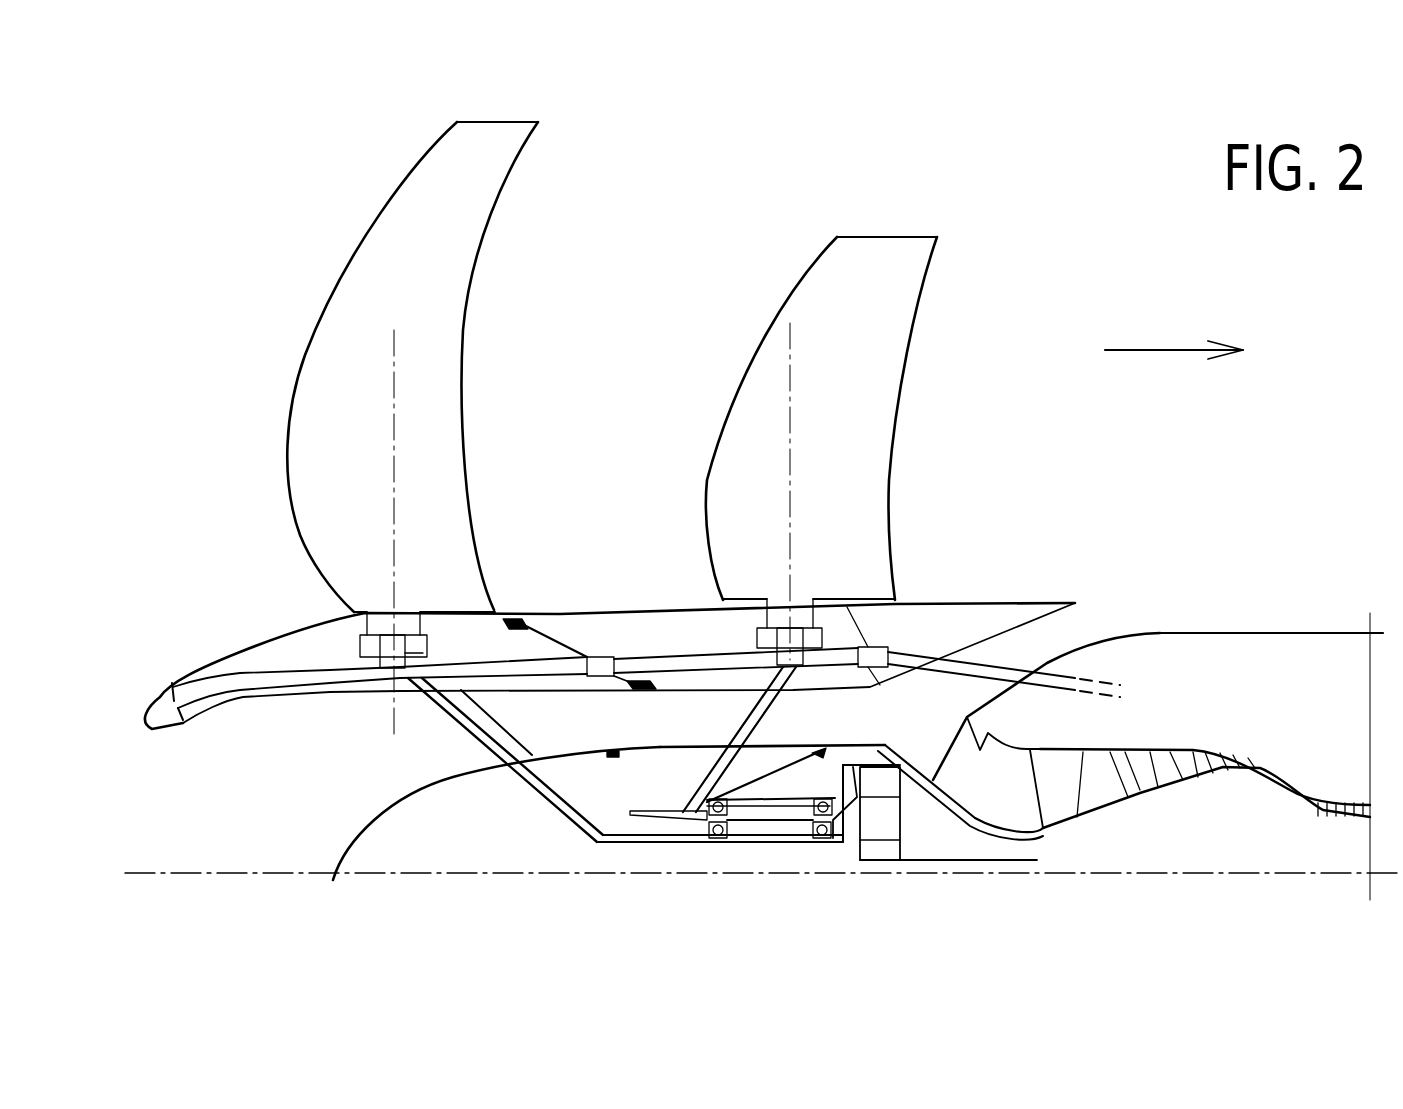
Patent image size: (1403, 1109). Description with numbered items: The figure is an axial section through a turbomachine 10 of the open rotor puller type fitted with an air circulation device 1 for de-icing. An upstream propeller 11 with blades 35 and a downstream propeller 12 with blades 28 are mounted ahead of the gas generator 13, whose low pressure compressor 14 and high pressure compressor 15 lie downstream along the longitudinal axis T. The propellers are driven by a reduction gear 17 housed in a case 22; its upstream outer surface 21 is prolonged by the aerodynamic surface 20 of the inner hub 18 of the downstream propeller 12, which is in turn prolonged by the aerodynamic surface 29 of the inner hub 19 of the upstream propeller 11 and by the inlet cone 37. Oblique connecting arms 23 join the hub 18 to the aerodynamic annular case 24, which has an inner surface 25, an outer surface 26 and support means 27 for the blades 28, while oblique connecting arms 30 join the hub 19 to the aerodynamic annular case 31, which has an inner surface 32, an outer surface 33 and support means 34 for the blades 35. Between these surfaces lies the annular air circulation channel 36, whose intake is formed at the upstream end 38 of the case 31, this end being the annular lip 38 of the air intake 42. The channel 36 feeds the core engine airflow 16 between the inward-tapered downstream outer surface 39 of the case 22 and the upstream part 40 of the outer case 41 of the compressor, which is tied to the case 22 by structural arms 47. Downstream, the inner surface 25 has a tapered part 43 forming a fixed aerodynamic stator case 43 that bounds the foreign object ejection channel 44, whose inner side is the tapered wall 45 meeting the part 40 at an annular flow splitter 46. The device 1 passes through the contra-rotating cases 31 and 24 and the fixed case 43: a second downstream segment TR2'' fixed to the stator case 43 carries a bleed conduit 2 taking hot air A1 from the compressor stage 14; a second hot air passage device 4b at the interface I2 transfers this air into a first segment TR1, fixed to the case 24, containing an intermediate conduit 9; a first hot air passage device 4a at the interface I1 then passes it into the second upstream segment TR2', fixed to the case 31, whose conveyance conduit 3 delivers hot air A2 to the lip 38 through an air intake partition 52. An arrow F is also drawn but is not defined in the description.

The air circulation device 1 is at (668, 647).
The hot air bleed conduit 2 is at (1035, 660).
The hot air conveyance conduit 3 is at (257, 673).
The first hot air passage device 4a is at (612, 655).
The second hot air passage device 4b is at (967, 717).
The intermediate conduit 9 is at (690, 655).
The turbomachine 10 is at (250, 222).
The upstream propeller 11 is at (392, 182).
The downstream propeller 12 is at (905, 237).
The gas generator 13 is at (1262, 732).
The compressor stage 14 is at (1160, 750).
The high pressure compressor 15 is at (1332, 827).
The core engine airflow 16 is at (1200, 788).
The reduction gear 17 is at (856, 853).
The inner hub of the downstream propeller 18 is at (738, 845).
The inner hub of the upstream propeller 19 is at (618, 880).
The radially outer aerodynamic surface 20 is at (817, 746).
The upstream outer surface 21 is at (885, 745).
The case of the reduction gear 22 is at (918, 780).
The oblique connecting arms 23 is at (725, 660).
The aerodynamic annular case of the downstream propeller 24 is at (645, 600).
The inner surface 25 is at (695, 808).
The outer surface 26 is at (583, 640).
The support means 27 is at (760, 598).
The blades of the downstream propeller 28 is at (893, 345).
The radially outer aerodynamic surface 29 is at (590, 745).
The oblique connecting arms 30 is at (460, 745).
The aerodynamic annular case of the upstream propeller 31 is at (446, 637).
The inner surface 32 is at (560, 752).
The outer surface 33 is at (473, 615).
The support means 34 is at (345, 645).
The blades of the upstream propeller 35 is at (485, 200).
The annular air circulation channel 36 is at (746, 734).
The inlet cone 37 is at (345, 865).
The annular lip 38 is at (157, 707).
The downstream outer surface 39 is at (907, 632).
The upstream part of the outer case 40 is at (997, 733).
The outer case of the low pressure compressor 41 is at (1118, 748).
The air intake 42 is at (243, 788).
The aerodynamic annular stator case 43 is at (1047, 655).
The annular foreign object ejection channel 44 is at (1017, 665).
The tapered wall 45 is at (1087, 680).
The annular flow splitter 46 is at (957, 630).
The structural arms 47 is at (972, 790).
The air intake partition 52 is at (173, 680).
The hot air A1 is at (1160, 633).
The hot air A2 is at (297, 677).
The flow direction F is at (1170, 348).
The interface I1 is at (555, 640).
The interface I2 is at (872, 630).
The longitudinal axis T is at (200, 873).
The first segment TR1 is at (825, 607).
The second upstream segment TR2' is at (333, 557).
The second downstream segment TR2'' is at (1065, 552).